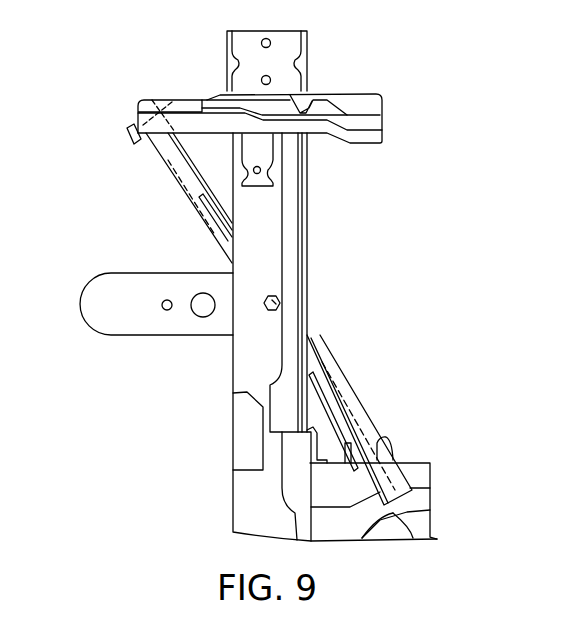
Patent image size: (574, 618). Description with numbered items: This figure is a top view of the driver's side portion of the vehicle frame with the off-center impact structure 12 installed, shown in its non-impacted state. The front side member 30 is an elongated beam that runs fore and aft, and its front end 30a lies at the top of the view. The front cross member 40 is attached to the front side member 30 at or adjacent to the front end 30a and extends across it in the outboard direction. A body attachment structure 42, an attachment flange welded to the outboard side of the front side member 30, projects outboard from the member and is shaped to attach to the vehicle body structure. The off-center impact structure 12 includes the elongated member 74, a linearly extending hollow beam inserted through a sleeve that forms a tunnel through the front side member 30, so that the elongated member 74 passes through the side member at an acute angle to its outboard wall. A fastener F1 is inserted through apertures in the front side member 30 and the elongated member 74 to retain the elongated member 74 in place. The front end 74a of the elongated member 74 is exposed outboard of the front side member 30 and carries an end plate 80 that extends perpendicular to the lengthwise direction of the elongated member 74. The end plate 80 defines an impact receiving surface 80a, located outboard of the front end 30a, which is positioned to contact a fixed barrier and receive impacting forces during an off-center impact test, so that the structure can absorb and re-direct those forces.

The front end 30a is at (289, 31).
The front cross member 40 is at (364, 100).
The impact receiving surface 80a is at (161, 97).
The end plate 80 is at (126, 136).
The front end 74a is at (147, 143).
The front side member 30 is at (267, 242).
The body attachment structure 42 is at (115, 311).
The fastener F1 is at (273, 300).
The elongated member 74 is at (335, 388).
The off-center impact structure 12 is at (202, 199).